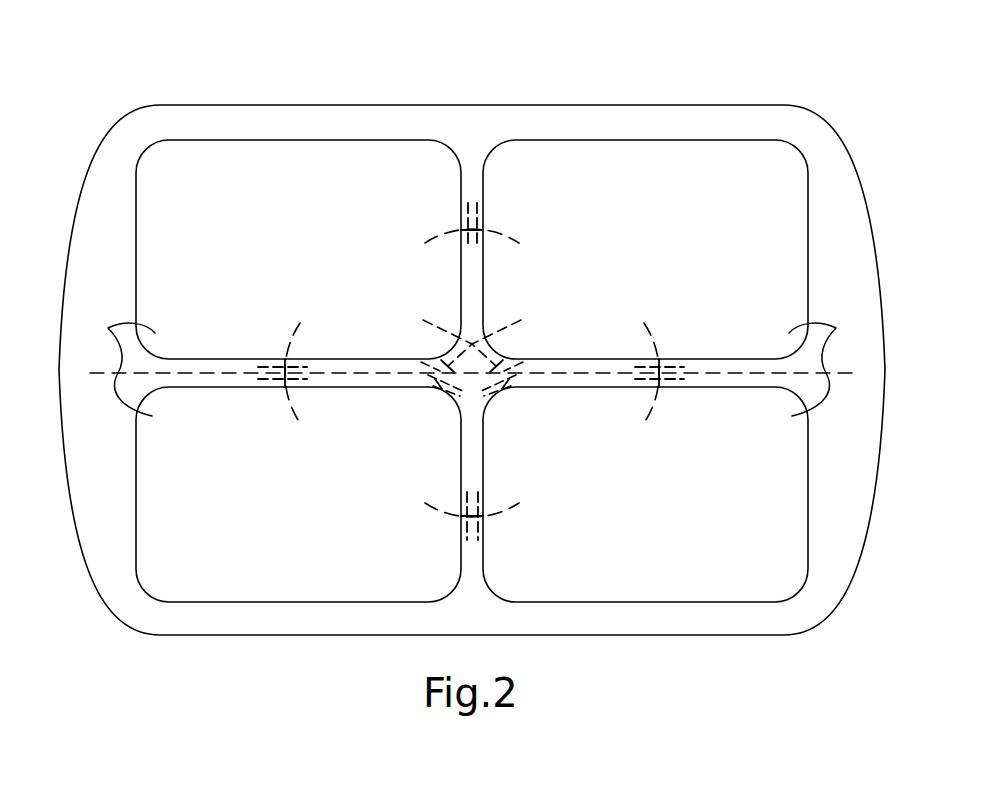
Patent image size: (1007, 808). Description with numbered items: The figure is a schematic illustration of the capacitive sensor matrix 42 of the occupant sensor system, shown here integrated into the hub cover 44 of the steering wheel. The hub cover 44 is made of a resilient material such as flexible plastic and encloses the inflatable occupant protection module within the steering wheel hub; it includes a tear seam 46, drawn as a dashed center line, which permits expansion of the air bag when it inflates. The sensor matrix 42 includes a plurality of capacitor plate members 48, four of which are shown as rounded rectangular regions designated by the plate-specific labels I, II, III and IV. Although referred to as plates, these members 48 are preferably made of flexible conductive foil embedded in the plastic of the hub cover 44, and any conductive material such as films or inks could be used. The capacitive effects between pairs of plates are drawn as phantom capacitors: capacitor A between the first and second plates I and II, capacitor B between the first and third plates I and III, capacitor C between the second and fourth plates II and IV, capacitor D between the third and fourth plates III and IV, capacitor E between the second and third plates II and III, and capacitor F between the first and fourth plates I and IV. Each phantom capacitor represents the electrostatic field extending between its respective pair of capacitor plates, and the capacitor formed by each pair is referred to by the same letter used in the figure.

The sensor matrix 42 is at (463, 349).
The hub cover 44 is at (93, 193).
The tear seam 46 is at (93, 372).
The capacitor plate members 48 is at (473, 367).
The phantom capacitor A is at (472, 225).
The phantom capacitor B is at (282, 373).
The phantom capacitor C is at (659, 373).
The phantom capacitor D is at (472, 516).
The phantom capacitor E is at (430, 397).
The phantom capacitor F is at (514, 397).
The first capacitor plate I is at (299, 258).
The second capacitor plate II is at (650, 257).
The third capacitor plate III is at (307, 502).
The fourth capacitor plate IV is at (656, 486).